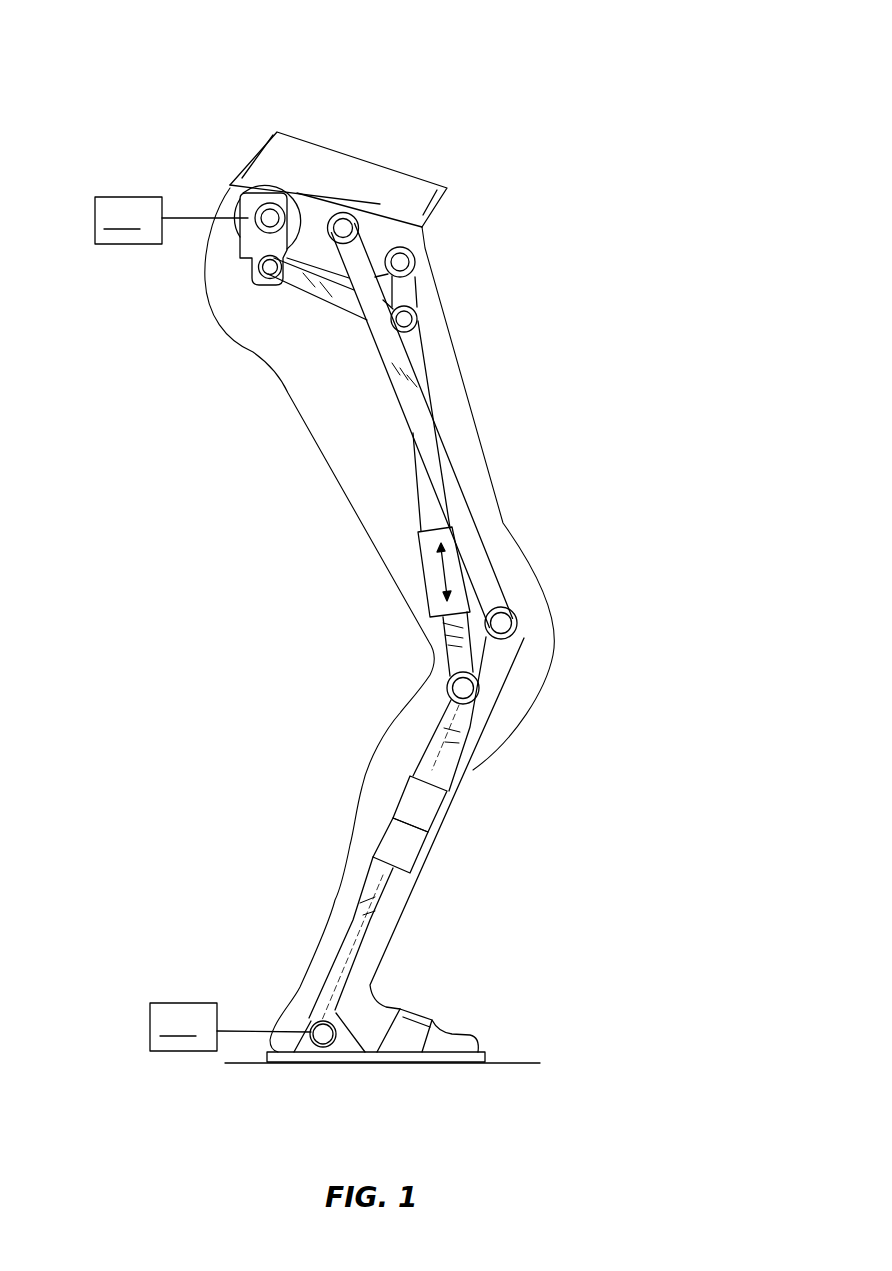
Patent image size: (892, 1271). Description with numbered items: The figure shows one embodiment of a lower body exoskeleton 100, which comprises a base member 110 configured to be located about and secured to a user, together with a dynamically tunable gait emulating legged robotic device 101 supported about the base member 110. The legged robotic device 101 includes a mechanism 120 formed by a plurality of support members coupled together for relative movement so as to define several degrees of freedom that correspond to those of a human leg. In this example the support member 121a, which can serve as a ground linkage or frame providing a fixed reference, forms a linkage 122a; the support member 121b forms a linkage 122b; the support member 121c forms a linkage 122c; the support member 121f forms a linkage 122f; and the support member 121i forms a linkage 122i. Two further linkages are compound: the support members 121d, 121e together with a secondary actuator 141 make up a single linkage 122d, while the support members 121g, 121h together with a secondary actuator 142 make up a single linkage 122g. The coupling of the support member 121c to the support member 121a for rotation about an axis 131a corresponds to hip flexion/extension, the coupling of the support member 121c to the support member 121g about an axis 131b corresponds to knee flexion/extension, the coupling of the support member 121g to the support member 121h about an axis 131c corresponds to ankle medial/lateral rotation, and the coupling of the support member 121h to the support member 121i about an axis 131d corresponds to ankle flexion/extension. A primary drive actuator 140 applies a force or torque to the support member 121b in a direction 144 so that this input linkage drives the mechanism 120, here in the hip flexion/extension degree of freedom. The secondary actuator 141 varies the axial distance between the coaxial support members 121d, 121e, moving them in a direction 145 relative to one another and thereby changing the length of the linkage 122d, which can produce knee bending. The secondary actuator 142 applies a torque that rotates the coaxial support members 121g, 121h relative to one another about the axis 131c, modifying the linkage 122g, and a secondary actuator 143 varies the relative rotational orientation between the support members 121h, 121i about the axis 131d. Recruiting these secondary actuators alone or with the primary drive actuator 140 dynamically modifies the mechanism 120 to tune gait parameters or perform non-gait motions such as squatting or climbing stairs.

The lower body exoskeleton 100 is at (162, 73).
The base member 110 is at (318, 162).
The axis 131a is at (348, 226).
The support member 121a is at (448, 267).
The linkage 122a is at (375, 238).
The dynamically tunable gait emulating legged robotic device 101 is at (413, 620).
The primary drive actuator 140 is at (171, 184).
The direction 144 is at (241, 240).
The support member 121b is at (176, 296).
The linkage 122b is at (257, 277).
The support member 121f is at (259, 326).
The linkage 122f is at (312, 300).
The support member 121d is at (420, 350).
The mechanism 120 is at (504, 439).
The support member 121c is at (463, 473).
The linkage 122c is at (463, 473).
The linkage 122d is at (409, 499).
The direction 145 is at (470, 575).
The secondary actuator 141 is at (460, 576).
The axis 131b is at (502, 623).
The support member 121e is at (472, 652).
The support member 121g is at (470, 735).
The linkage 122g is at (448, 784).
The axis 131c is at (430, 832).
The secondary actuator 142 is at (458, 836).
The support member 121h is at (383, 910).
The secondary actuator 143 is at (230, 991).
The axis 131d is at (322, 1037).
The support member 121i is at (382, 1071).
The linkage 122i is at (369, 1062).